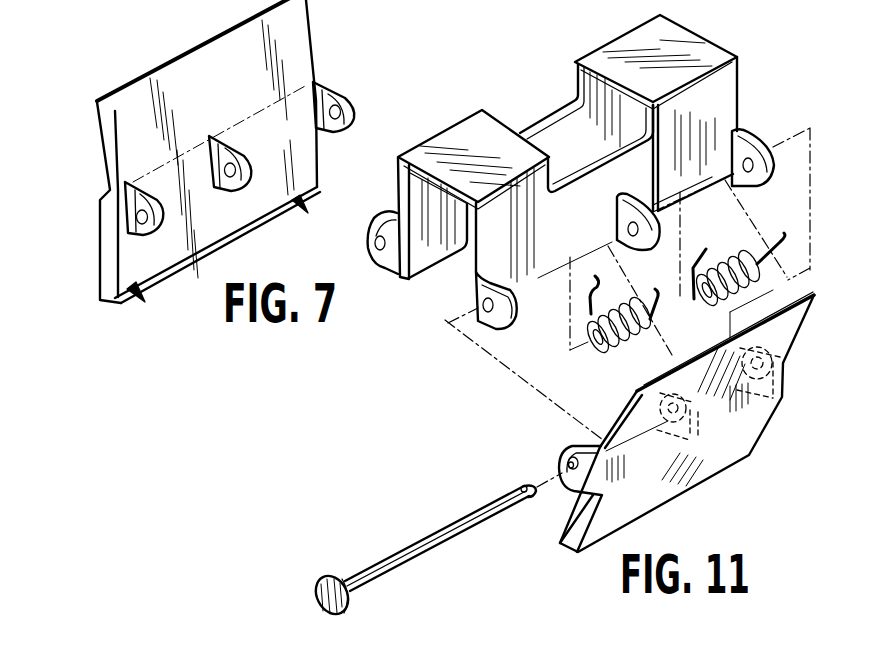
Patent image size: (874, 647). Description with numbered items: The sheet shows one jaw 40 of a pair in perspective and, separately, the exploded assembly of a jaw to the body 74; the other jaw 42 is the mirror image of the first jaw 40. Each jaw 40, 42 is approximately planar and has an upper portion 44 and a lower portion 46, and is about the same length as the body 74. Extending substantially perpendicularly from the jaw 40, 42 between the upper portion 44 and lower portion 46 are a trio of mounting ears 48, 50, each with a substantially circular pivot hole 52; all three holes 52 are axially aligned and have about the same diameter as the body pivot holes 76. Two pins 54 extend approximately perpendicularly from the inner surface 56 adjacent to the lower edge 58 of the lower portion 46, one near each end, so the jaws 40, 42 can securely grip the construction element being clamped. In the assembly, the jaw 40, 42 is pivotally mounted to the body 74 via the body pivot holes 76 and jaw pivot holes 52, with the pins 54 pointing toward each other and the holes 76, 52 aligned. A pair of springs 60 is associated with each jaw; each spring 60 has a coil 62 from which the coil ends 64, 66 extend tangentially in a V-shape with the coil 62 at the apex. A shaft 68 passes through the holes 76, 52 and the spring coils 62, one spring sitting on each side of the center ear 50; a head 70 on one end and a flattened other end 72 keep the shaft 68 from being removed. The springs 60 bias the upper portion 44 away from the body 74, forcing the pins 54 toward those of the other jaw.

In FIG. 7, the jaw 40 is at (222, 167).
In FIG. 11, the jaw 42 is at (701, 478).
In FIG. 7, the upper portion 44 is at (313, 32).
In FIG. 11, the upper portion 44 is at (679, 422).
In FIG. 7, the lower portion 46 is at (317, 150).
In FIG. 7, the mounting ear 48 is at (353, 110).
In FIG. 7, the center mounting ear 50 is at (247, 150).
In FIG. 7, the pivot hole 52 is at (328, 108).
In FIG. 11, the pivot hole 52 is at (562, 462).
In FIG. 7, the pin 54 is at (130, 296).
In FIG. 7, the inner surface 56 is at (177, 267).
In FIG. 7, the lower edge 58 is at (220, 247).
In FIG. 11, the spring 60 is at (705, 301).
In FIG. 11, the coil 62 is at (607, 352).
In FIG. 11, the coil end 64 is at (596, 287).
In FIG. 11, the coil end 66 is at (654, 293).
In FIG. 11, the shaft 68 is at (423, 538).
In FIG. 11, the head 70 is at (330, 577).
In FIG. 11, the flattened end 72 is at (521, 485).
In FIG. 11, the body 74 is at (585, 169).
In FIG. 11, the body pivot hole 76 is at (747, 135).